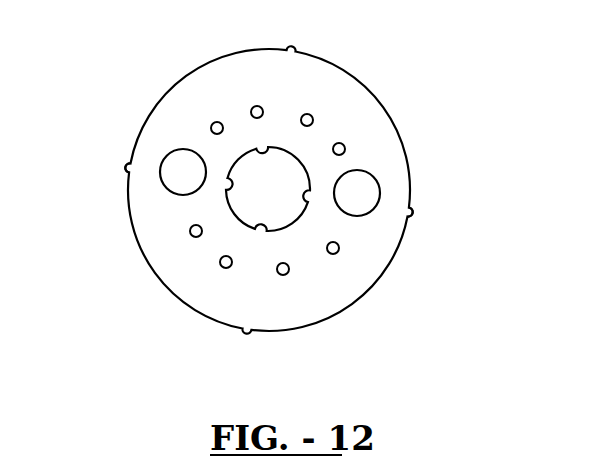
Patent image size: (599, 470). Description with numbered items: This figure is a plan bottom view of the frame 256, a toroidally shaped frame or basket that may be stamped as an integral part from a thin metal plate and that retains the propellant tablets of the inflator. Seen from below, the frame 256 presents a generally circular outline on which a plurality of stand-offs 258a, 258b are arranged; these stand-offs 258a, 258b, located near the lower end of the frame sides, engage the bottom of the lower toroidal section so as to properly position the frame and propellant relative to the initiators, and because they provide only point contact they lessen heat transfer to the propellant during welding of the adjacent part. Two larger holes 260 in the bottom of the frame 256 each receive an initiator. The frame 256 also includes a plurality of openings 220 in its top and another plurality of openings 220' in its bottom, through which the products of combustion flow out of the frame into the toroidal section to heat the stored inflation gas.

The frame 256 is at (161, 78).
The stand-off 258a is at (126, 163).
The stand-off 258b is at (266, 148).
The holes 260 is at (168, 169).
The openings 220 is at (267, 209).
The openings 220' is at (372, 84).